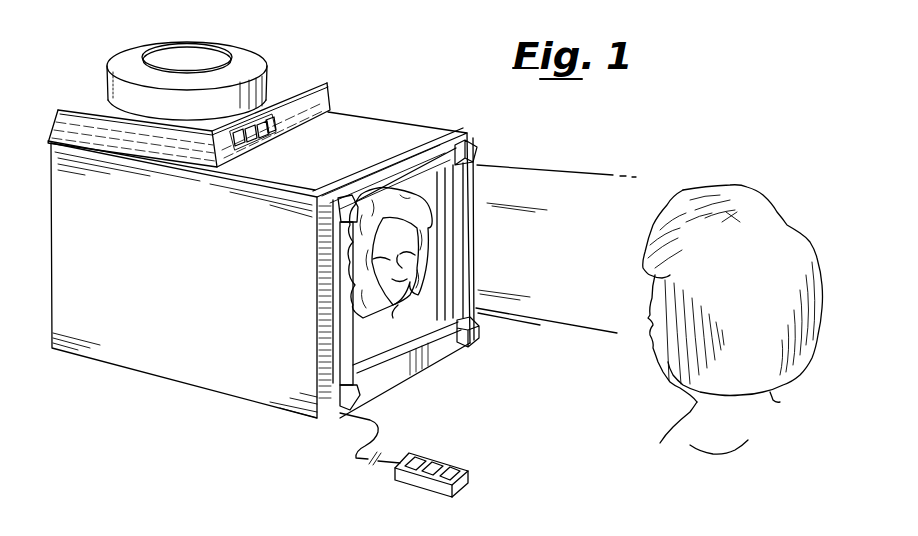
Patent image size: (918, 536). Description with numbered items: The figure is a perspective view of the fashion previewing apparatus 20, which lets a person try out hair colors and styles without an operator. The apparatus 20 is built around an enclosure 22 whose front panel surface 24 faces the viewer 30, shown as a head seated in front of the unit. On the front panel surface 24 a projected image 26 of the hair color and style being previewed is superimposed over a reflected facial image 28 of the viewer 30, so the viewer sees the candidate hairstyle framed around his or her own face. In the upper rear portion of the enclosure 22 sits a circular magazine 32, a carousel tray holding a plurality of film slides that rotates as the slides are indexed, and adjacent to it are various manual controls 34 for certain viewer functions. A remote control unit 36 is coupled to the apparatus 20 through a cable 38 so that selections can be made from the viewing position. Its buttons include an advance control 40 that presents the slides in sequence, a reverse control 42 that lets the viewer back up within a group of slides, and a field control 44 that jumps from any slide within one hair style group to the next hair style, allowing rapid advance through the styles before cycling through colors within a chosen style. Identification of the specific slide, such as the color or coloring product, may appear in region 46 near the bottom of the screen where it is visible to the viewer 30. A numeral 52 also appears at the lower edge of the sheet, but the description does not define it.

The fashion previewing apparatus 20 is at (412, 110).
The enclosure 22 is at (192, 369).
The front panel surface 24 is at (430, 300).
The projected image 26 is at (425, 222).
The reflected facial image 28 is at (405, 233).
The viewer 30 is at (652, 359).
The circular magazine 32 is at (245, 62).
The manual controls 34 is at (325, 107).
The remote control unit 36 is at (413, 482).
The cable 38 is at (355, 458).
The advance control 40 is at (455, 474).
The reverse control 42 is at (437, 463).
The field control 44 is at (417, 457).
The region 46 is at (433, 327).
The base 52 is at (467, 533).